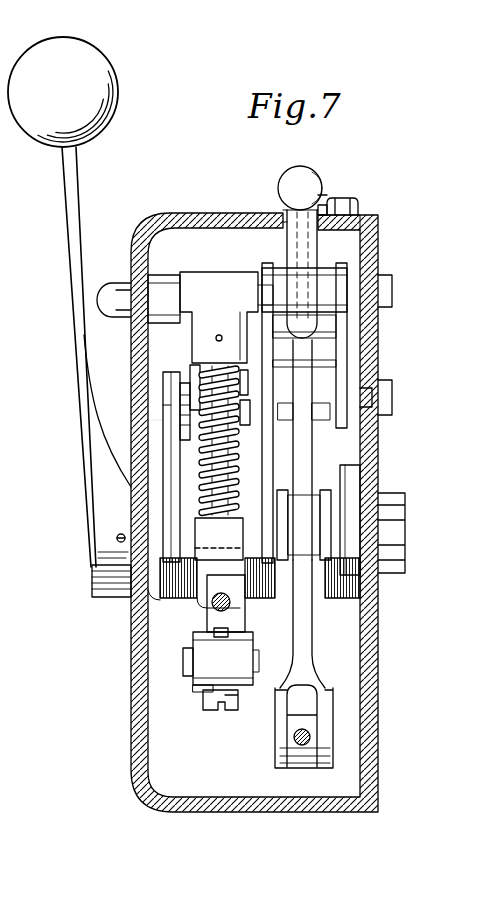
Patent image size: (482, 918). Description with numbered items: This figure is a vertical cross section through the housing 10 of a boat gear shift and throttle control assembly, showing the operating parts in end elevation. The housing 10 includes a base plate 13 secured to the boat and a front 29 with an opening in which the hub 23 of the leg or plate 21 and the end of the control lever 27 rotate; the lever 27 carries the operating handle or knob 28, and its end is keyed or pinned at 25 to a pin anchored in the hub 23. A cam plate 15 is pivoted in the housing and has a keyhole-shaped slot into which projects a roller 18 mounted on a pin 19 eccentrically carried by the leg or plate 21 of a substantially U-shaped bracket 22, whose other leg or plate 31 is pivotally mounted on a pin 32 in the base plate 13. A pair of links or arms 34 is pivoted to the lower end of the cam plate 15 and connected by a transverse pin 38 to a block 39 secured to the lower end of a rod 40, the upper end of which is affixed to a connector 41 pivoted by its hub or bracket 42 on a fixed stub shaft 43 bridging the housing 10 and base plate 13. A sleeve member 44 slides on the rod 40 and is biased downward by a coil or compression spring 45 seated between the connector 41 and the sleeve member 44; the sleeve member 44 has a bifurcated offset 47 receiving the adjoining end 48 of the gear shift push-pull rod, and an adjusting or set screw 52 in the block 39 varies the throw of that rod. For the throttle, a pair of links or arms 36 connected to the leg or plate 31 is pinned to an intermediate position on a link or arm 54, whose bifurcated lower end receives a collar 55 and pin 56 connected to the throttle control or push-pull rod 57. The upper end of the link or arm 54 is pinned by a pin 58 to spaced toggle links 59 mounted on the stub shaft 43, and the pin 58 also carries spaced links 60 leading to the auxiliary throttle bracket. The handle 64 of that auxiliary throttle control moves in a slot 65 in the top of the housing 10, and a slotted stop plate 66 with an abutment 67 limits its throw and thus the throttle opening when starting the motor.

The housing 10 is at (207, 209).
The base plate 13 is at (379, 243).
The cam plate 15 is at (135, 442).
The roller 18 is at (190, 380).
The pin 19 is at (182, 397).
The leg or plate 21 is at (165, 407).
The U-shaped bracket 22 is at (229, 596).
The hub 23 is at (139, 610).
The key or pin connection 25 is at (116, 538).
The control lever 27 is at (72, 378).
The operating handle or knob 28 is at (118, 68).
The front 29 is at (132, 655).
The leg or plate 31 is at (352, 477).
The pin 32 is at (386, 533).
The links or arms 34 is at (193, 687).
The links or arms 36 is at (290, 525).
The transverse pin 38 is at (183, 660).
The block 39 is at (234, 672).
The rod 40 is at (237, 456).
The connector 41 is at (199, 350).
The hub or bracket 42 is at (208, 272).
The fixed stub shaft 43 is at (136, 300).
The sleeve member 44 is at (234, 546).
The coil or compression spring 45 is at (237, 486).
The bifurcated offset 47 is at (200, 602).
The adjoining end 48 is at (234, 608).
The adjusting or set screw 52 is at (208, 712).
The link or arm 54 is at (312, 640).
The collar 55 is at (302, 765).
The pin 56 is at (275, 742).
The control or push-pull rod 57 is at (308, 728).
The pin 58 is at (378, 382).
The toggle links 59 is at (260, 263).
The spaced links 60 is at (336, 384).
The handle 64 is at (284, 179).
The slot 65 is at (287, 212).
The slotted stop plate 66 is at (356, 208).
The abutment 67 is at (322, 203).